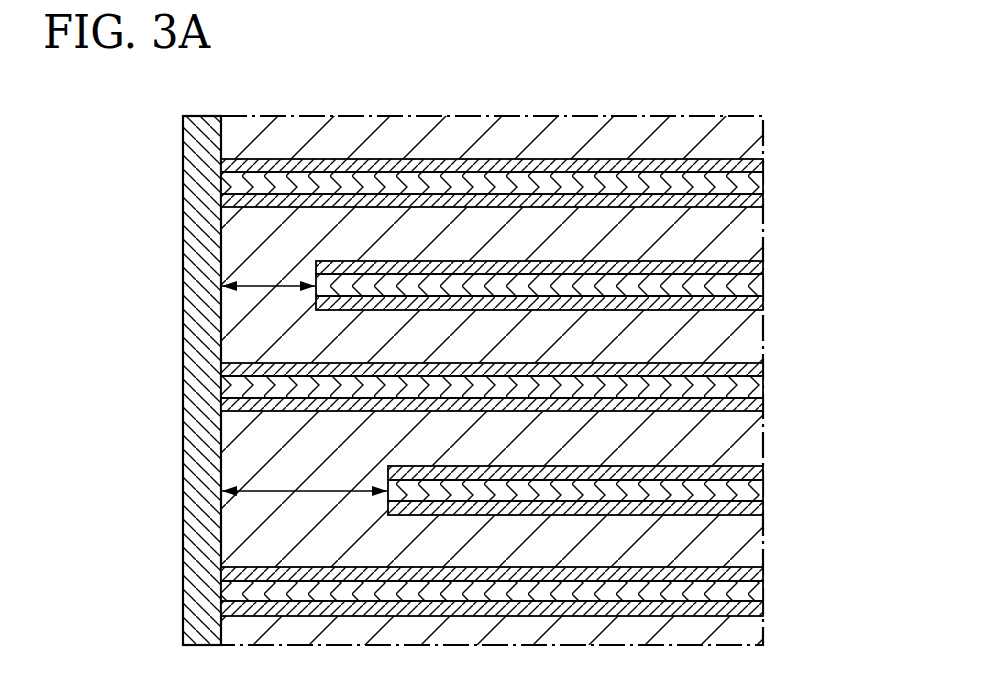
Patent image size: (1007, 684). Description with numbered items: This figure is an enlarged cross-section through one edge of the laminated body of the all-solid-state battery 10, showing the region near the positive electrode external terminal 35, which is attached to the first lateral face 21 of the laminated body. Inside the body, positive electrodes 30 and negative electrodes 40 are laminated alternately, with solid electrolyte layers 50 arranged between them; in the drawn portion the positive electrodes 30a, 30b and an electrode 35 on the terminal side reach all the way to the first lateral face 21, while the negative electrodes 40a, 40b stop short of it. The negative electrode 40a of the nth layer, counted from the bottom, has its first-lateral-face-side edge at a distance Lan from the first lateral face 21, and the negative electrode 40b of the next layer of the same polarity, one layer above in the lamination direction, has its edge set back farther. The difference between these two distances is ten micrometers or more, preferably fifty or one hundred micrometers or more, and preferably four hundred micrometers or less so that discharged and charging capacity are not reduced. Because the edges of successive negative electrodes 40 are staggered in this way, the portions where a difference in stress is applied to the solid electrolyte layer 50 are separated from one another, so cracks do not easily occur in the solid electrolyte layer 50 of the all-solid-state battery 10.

The all-solid-state battery 10 is at (491, 354).
The solid electrolyte layer 50 is at (505, 133).
The first lateral face 21 is at (215, 333).
The positive electrode 30 is at (405, 285).
The positive electrode of nth layer 30a is at (206, 385).
The positive electrode of n+1th layer 30b is at (206, 182).
The negative electrode 40 is at (625, 388).
The negative electrode of nth layer 40a is at (778, 491).
The negative electrode of n+1th layer 40b is at (778, 285).
The positive electrode external terminal 35 is at (205, 578).
The distance La n Lan is at (257, 474).